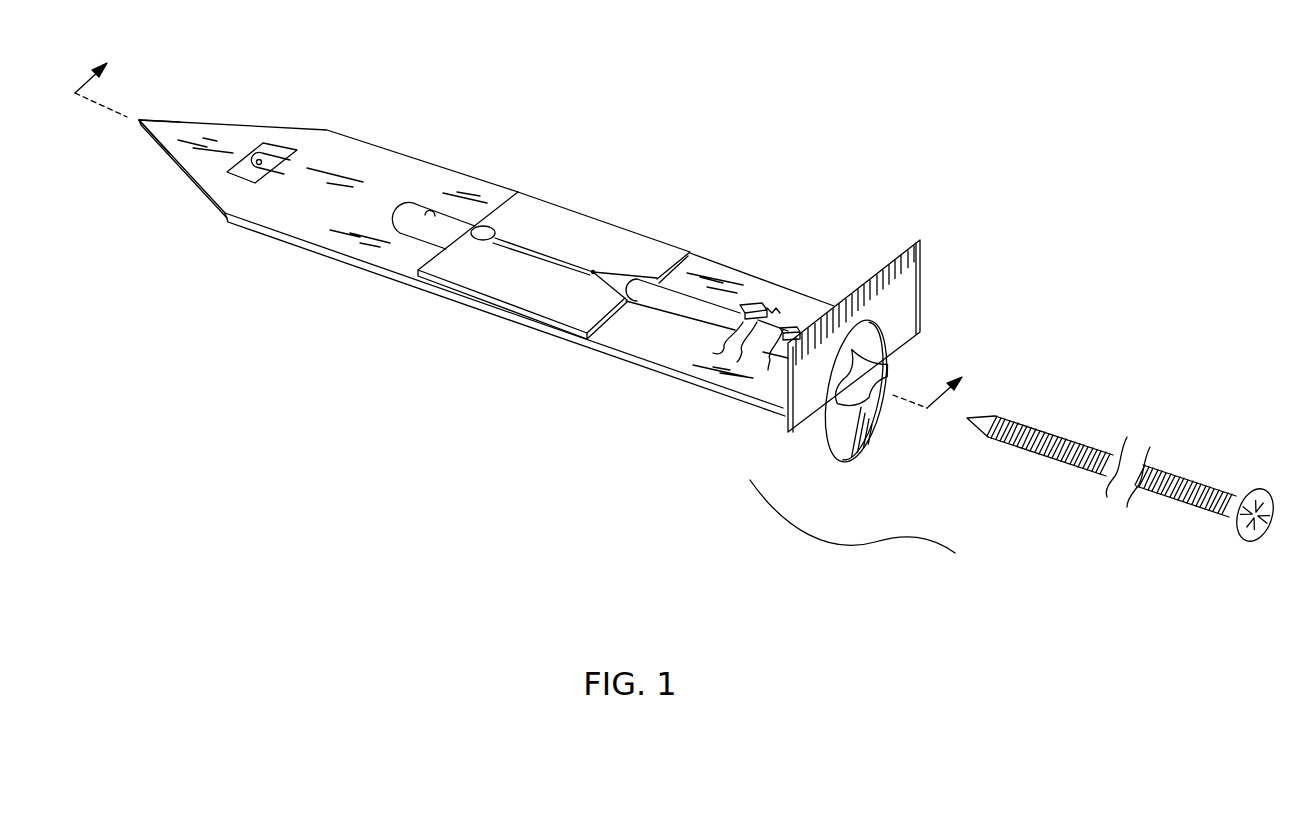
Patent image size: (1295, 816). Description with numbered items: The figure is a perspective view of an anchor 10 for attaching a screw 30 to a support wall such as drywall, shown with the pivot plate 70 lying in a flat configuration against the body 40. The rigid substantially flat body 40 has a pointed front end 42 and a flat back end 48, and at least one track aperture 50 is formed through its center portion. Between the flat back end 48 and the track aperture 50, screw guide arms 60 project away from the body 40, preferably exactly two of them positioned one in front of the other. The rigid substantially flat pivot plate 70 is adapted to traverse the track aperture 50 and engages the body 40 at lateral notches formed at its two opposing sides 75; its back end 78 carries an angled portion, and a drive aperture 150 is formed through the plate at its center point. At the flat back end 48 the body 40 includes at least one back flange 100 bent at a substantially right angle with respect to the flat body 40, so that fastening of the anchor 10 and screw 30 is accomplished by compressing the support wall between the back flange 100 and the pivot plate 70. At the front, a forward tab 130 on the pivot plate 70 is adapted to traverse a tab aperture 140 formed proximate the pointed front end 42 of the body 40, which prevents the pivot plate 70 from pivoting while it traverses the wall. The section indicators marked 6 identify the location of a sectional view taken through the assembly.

The anchor 10 is at (791, 116).
The screw 30 is at (1053, 432).
The flat body 40 is at (342, 157).
The pointed front end 42 is at (139, 118).
The flat back end 48 is at (916, 239).
The track aperture 50 is at (425, 203).
The screw guide arm 60 is at (742, 320).
The pivot plate 70 is at (572, 213).
The opposing sides 75 is at (272, 246).
The back end 78 is at (690, 253).
The back flange 100 is at (913, 288).
The forward tab 130 is at (290, 150).
The tab aperture 140 is at (252, 147).
The drive aperture 150 is at (486, 227).
The section line 6 is at (524, 226).